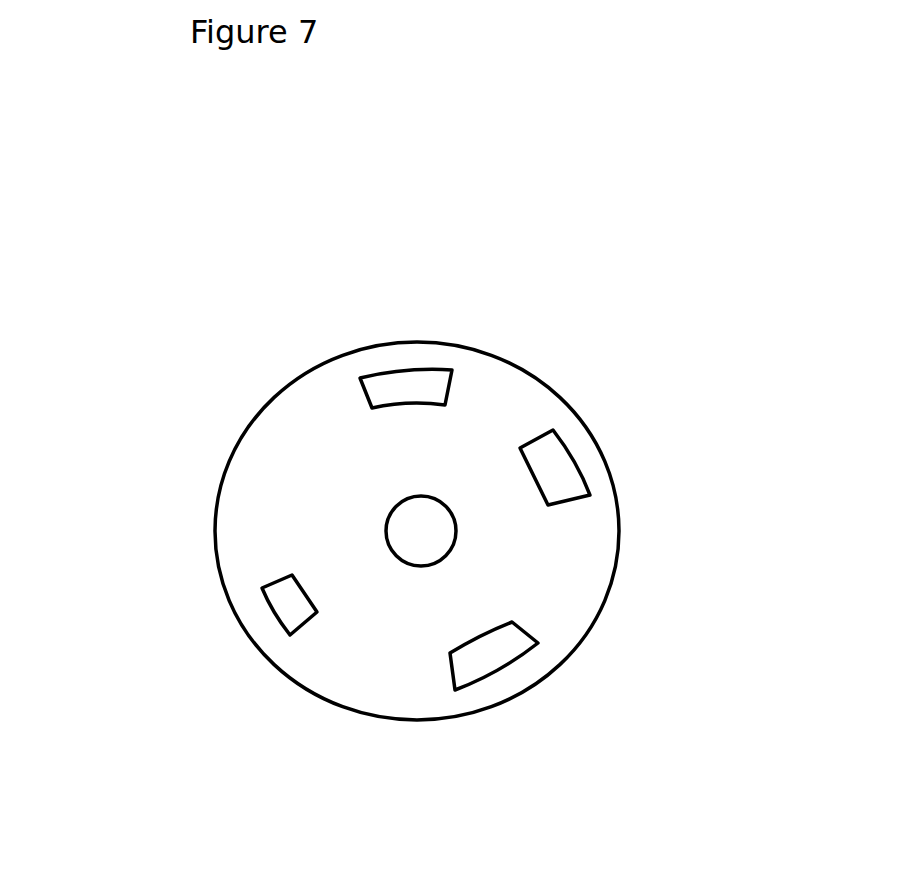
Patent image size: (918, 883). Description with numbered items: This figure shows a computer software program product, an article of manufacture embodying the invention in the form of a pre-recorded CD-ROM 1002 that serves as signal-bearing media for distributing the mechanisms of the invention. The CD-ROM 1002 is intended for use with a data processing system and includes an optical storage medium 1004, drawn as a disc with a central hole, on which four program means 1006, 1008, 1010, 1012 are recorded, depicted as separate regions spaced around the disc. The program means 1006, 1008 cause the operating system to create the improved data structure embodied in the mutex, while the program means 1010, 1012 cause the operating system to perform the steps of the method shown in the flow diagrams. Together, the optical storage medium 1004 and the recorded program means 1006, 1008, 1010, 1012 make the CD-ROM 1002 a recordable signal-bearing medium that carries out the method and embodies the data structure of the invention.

The pre-recorded CD-ROM 1002 is at (476, 209).
The optical storage medium 1004 is at (547, 553).
The program means 1006 is at (563, 465).
The program means 1008 is at (432, 382).
The program means 1010 is at (282, 602).
The program means 1012 is at (482, 670).